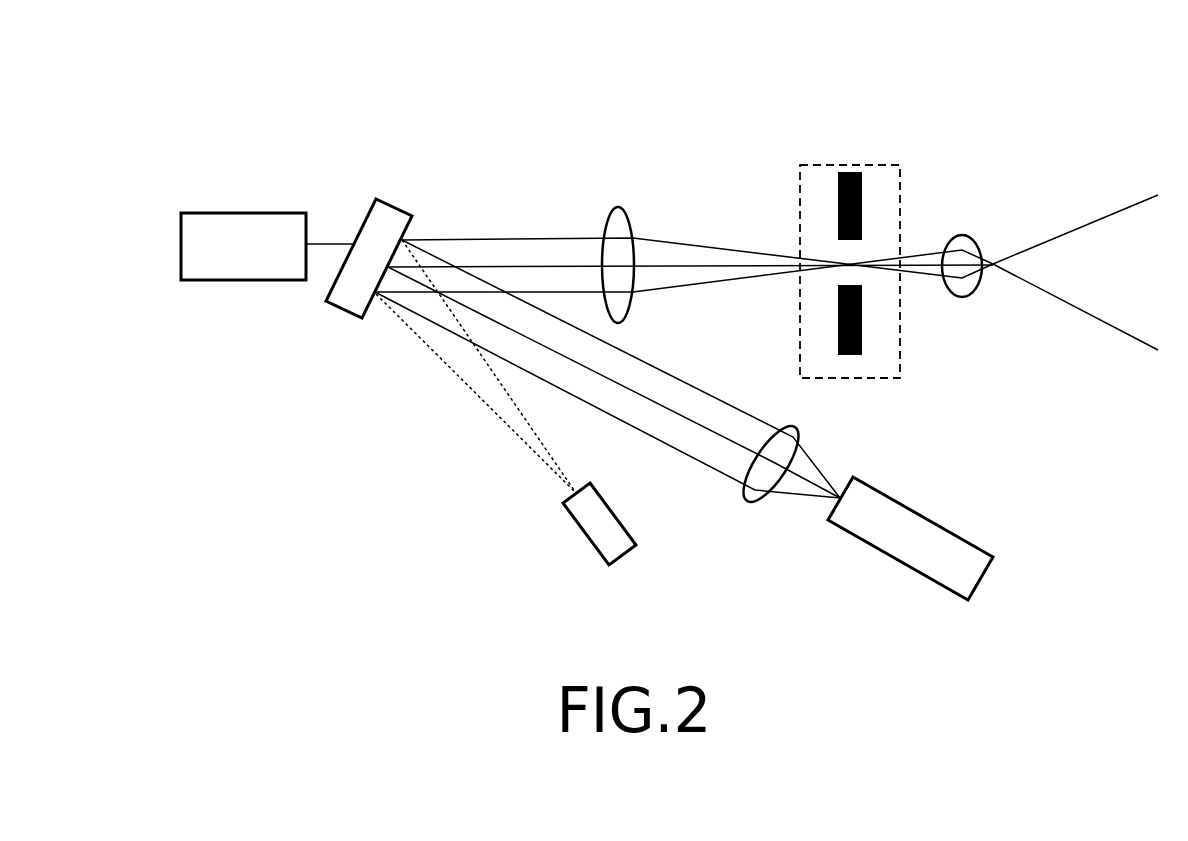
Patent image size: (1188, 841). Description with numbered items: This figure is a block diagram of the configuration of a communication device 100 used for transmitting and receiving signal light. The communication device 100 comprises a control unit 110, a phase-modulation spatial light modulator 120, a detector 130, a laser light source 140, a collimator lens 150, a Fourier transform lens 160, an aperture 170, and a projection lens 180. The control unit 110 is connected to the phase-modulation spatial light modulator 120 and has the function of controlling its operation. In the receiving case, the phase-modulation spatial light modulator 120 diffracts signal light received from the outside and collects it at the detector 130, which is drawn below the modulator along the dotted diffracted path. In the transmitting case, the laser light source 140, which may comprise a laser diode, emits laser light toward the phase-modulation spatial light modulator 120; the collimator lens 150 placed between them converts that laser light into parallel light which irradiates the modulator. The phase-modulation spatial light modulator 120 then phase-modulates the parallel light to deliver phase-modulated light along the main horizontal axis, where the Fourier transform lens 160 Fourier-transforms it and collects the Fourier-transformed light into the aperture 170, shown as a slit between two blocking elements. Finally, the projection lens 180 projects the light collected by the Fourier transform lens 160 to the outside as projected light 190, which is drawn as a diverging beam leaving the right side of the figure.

The communication device 100 is at (1032, 55).
The control unit 110 is at (193, 213).
The phase-modulation spatial light modulator 120 is at (387, 200).
The detector 130 is at (585, 535).
The laser light source 140 is at (967, 537).
The collimator lens 150 is at (757, 503).
The Fourier transform lens 160 is at (617, 206).
The aperture 170 is at (852, 165).
The projection lens 180 is at (963, 235).
The projected light 190 is at (1100, 320).